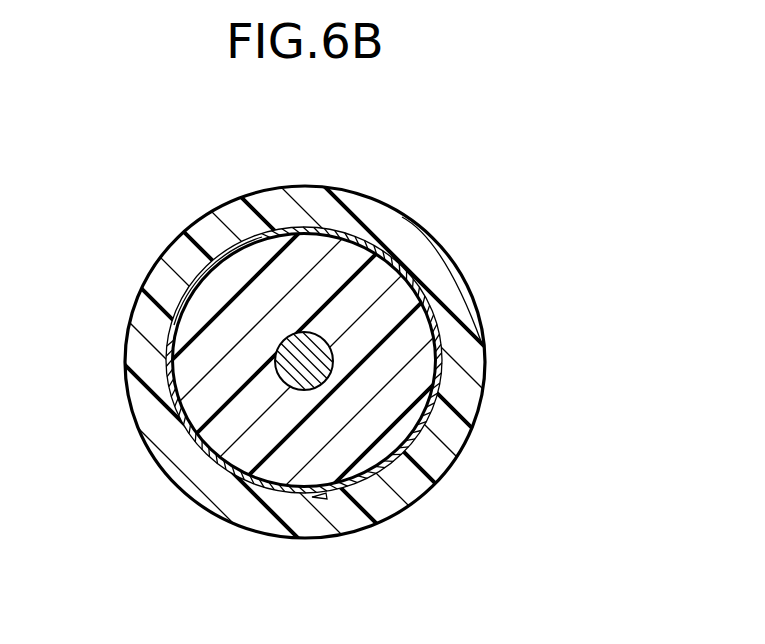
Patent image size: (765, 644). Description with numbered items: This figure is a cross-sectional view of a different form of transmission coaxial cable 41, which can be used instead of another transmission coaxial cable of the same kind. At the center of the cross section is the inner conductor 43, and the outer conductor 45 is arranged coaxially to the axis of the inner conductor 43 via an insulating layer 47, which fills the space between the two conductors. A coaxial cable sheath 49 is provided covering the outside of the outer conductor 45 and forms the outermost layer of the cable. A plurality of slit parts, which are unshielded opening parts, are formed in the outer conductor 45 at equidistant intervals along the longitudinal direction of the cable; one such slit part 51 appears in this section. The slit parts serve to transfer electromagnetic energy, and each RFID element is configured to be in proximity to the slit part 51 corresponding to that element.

The transmission coaxial cable 41 is at (482, 202).
The inner conductor 43 is at (331, 357).
The outer conductor 45 is at (440, 318).
The insulating layer 47 is at (390, 436).
The coaxial cable sheath 49 is at (222, 210).
The slit part 51 is at (313, 498).